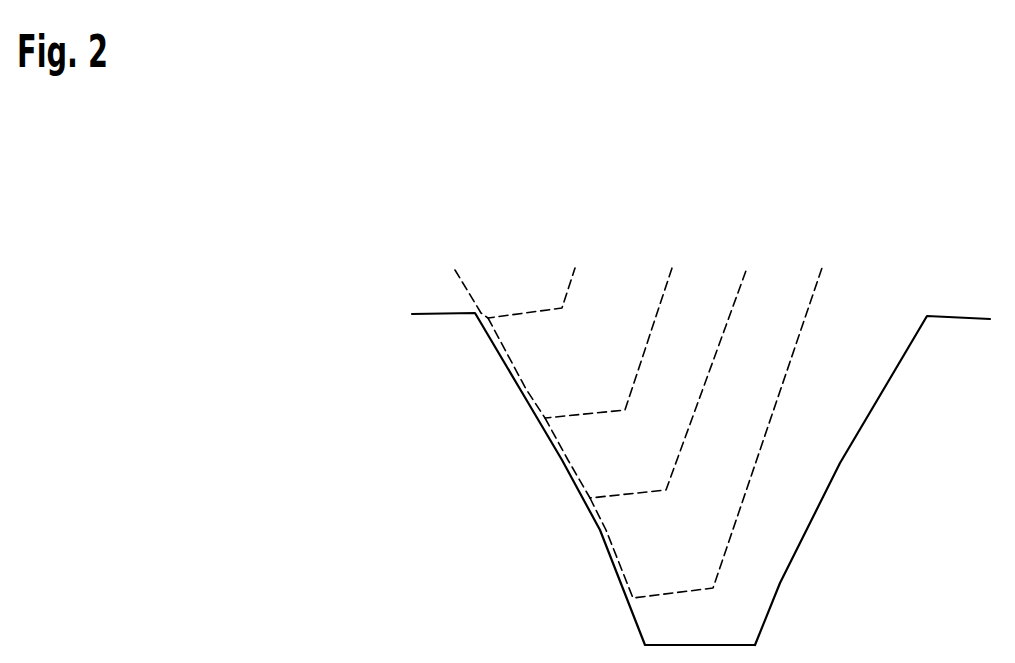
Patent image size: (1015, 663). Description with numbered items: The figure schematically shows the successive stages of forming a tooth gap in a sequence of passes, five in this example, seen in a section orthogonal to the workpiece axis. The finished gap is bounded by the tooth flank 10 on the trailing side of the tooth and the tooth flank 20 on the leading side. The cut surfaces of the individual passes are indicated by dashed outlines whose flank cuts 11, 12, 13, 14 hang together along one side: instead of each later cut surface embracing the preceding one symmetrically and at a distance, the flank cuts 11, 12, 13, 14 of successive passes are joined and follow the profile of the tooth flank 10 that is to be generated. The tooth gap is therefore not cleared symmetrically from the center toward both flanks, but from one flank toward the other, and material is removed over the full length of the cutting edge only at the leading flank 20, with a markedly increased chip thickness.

The tooth flank 10 is at (597, 528).
The flank cut 11 is at (458, 269).
The flank cut 12 is at (522, 375).
The flank cut 13 is at (577, 470).
The flank cut 14 is at (615, 560).
The tooth flank 20 is at (806, 528).